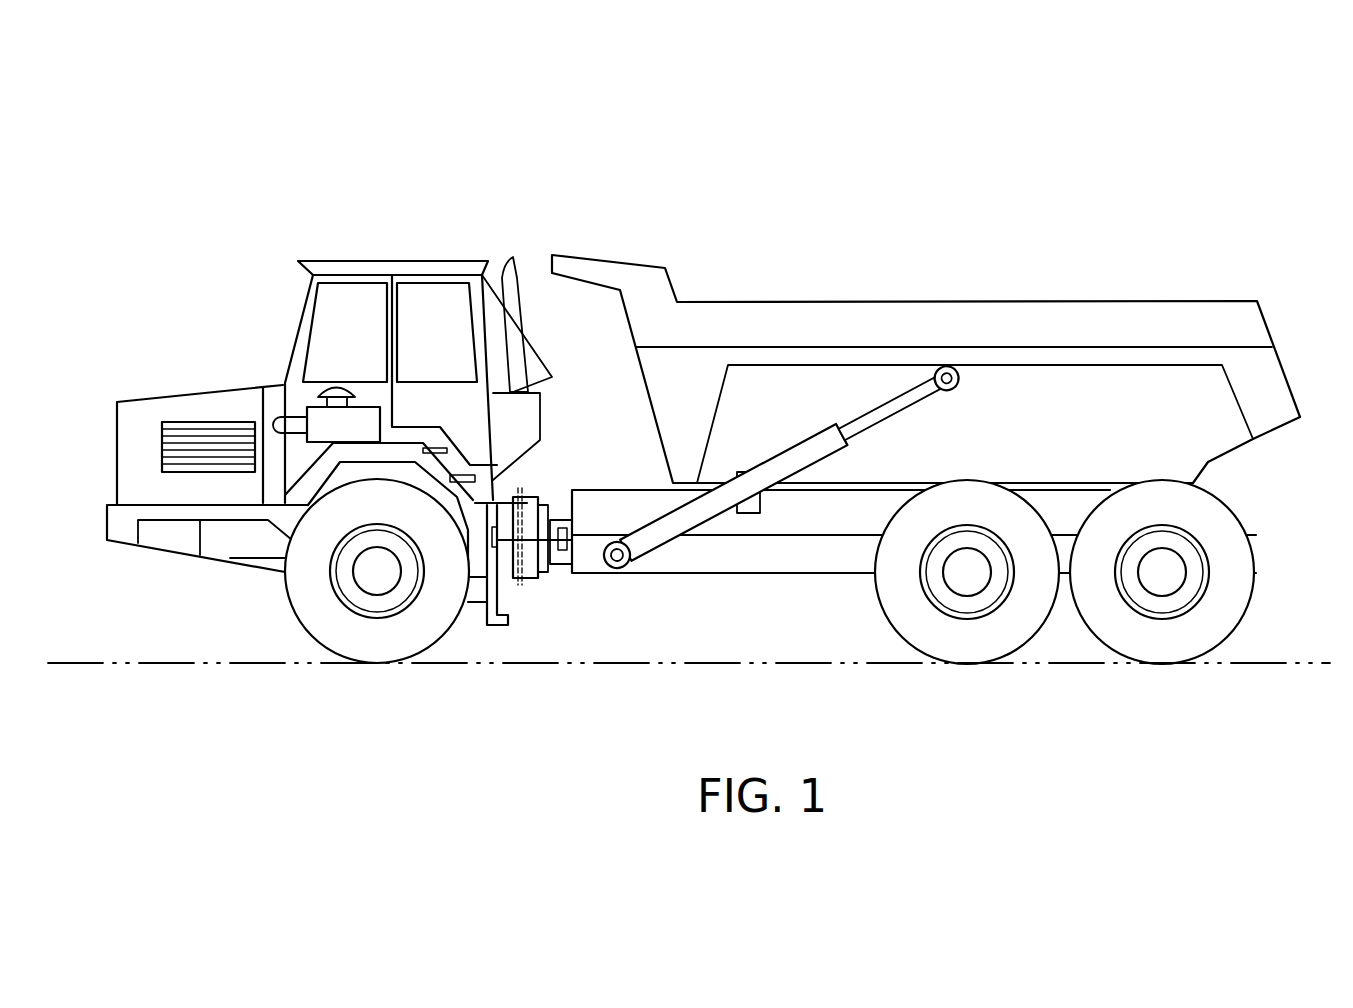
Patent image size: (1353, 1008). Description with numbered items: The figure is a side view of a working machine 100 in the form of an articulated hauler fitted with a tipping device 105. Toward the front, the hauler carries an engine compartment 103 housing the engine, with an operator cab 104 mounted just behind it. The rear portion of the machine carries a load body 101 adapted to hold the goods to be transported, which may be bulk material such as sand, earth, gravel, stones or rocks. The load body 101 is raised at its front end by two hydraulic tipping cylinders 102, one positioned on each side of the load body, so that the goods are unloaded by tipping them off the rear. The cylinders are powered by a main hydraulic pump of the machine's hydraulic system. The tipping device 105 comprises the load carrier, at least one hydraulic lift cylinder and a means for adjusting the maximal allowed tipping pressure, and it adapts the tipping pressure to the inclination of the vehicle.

The working machine 100 is at (688, 405).
The load body 101 is at (1103, 397).
The hydraulic tipping cylinder 102 is at (693, 517).
The engine compartment 103 is at (178, 392).
The operator cab 104 is at (392, 258).
The tipping device 105 is at (714, 217).